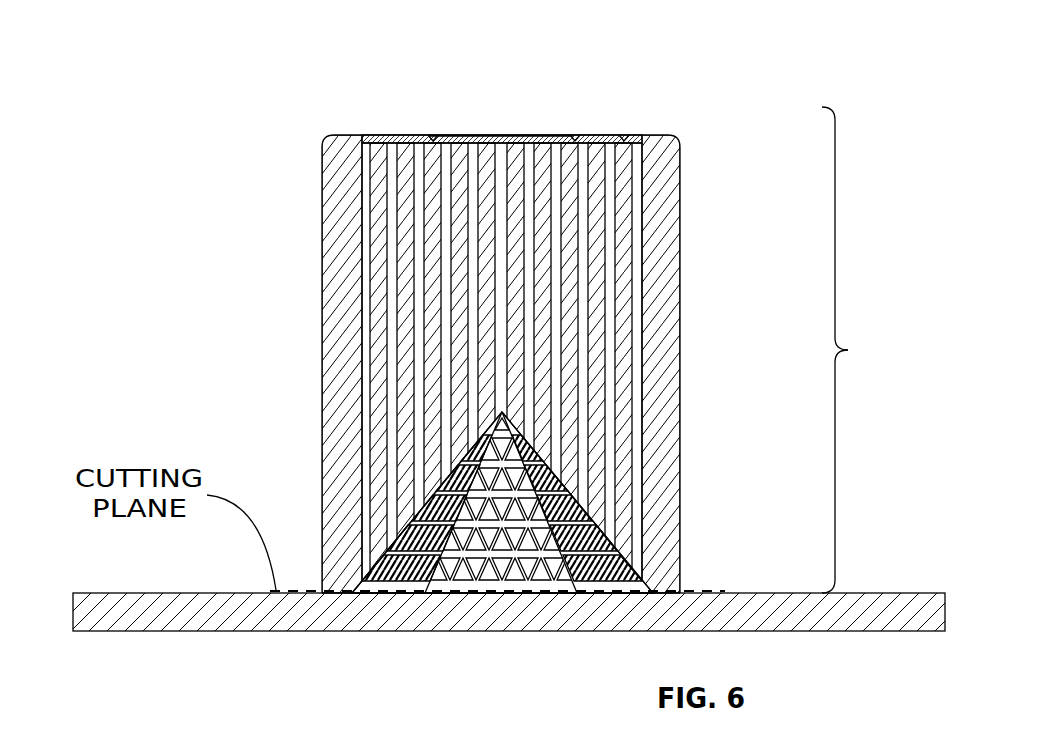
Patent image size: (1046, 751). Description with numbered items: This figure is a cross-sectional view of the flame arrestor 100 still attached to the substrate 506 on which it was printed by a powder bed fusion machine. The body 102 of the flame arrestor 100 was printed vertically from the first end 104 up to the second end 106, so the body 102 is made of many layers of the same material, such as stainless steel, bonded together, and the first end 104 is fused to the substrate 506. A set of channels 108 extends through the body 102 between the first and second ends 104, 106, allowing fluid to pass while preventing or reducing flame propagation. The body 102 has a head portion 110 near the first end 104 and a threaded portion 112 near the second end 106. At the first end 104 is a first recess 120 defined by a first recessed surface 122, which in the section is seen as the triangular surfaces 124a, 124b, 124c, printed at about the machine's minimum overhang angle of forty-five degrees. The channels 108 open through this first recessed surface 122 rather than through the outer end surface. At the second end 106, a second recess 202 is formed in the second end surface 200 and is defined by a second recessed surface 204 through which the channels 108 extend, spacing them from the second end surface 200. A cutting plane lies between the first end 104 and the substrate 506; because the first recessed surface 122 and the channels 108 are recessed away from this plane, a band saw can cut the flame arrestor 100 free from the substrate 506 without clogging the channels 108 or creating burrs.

The flame arrestor 100 is at (217, 52).
The body 102 is at (335, 208).
The first end 104 is at (385, 610).
The second end 106 is at (408, 117).
The channels 108 is at (645, 212).
The head portion 110 is at (835, 473).
The threaded portion 112 is at (835, 232).
The first recess 120 is at (482, 595).
The first recessed surface 122 is at (450, 487).
The triangular surface 124a is at (321, 495).
The triangular surface 124b is at (487, 453).
The triangular surface 124c is at (553, 463).
The second end surface 200 is at (660, 135).
The second recess 202 is at (530, 135).
The second recessed surface 204 is at (625, 138).
The substrate 506 is at (158, 613).